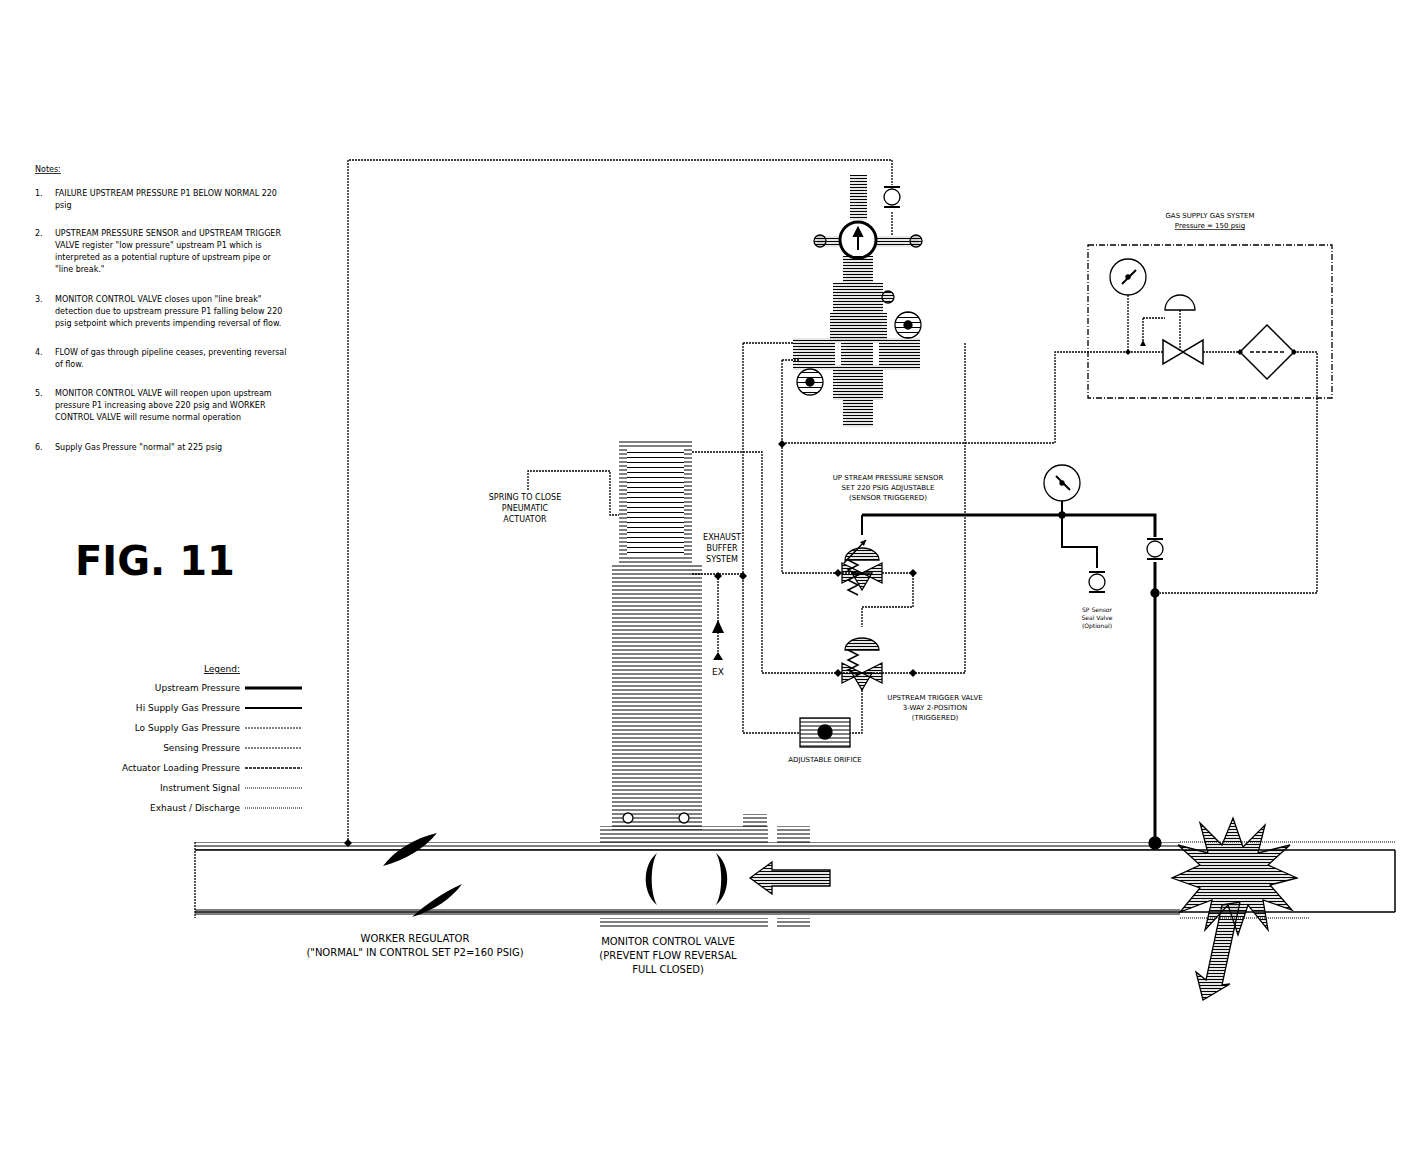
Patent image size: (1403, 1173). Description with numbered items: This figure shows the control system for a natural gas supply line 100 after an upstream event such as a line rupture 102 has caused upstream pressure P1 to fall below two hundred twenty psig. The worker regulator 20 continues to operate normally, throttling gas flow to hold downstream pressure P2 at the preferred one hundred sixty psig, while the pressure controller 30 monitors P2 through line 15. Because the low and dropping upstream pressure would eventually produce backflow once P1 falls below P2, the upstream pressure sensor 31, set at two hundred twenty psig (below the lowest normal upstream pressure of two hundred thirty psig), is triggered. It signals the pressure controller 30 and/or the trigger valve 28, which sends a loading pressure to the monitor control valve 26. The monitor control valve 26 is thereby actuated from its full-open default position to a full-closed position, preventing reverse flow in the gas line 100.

The line 15 is at (349, 590).
The worker regulator valve 20 is at (408, 830).
The monitor control valve 26 is at (625, 766).
The trigger valve 28 is at (857, 668).
The pressure controller 30 is at (897, 300).
The upstream pressure sensor 31 is at (872, 573).
The natural gas supply line 100 is at (1310, 849).
The upstream event (line rupture) 102 is at (1253, 812).